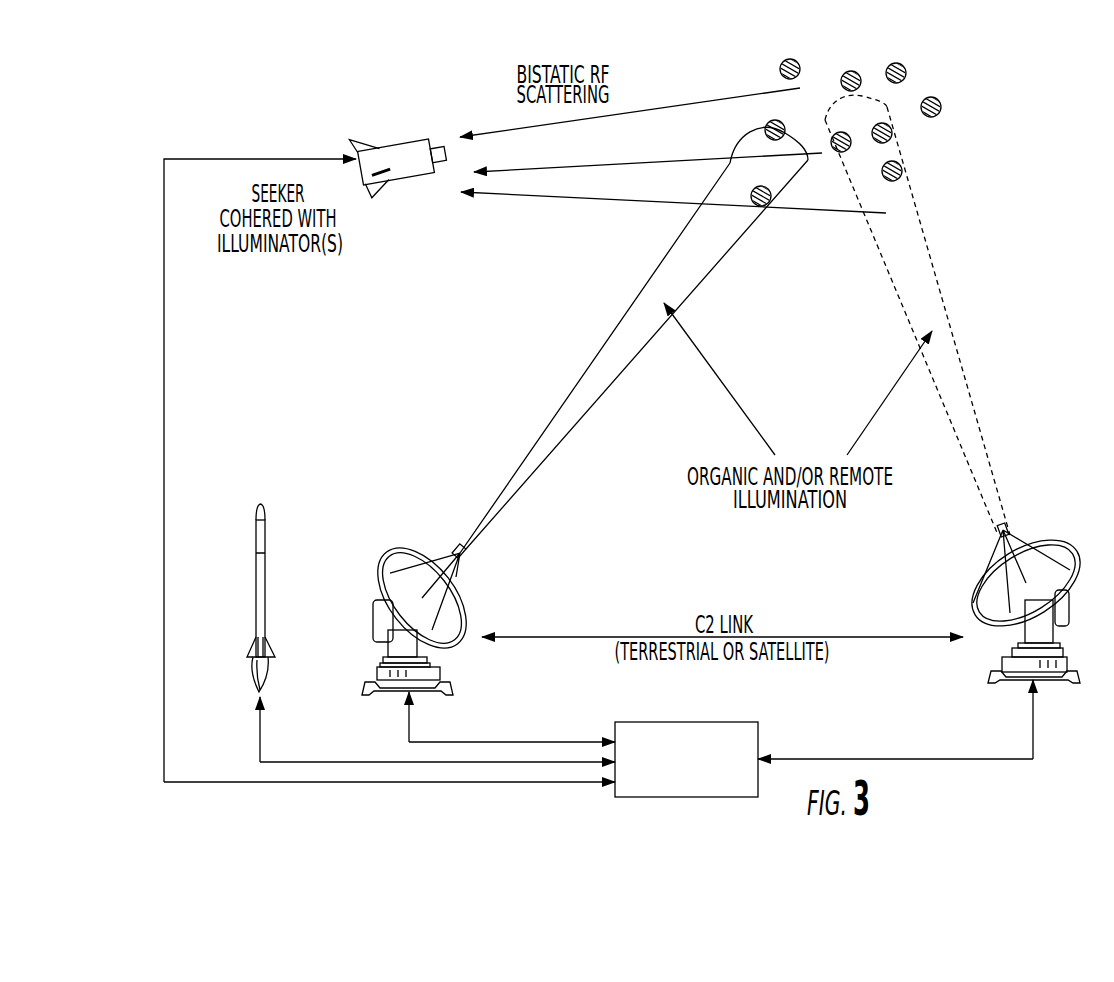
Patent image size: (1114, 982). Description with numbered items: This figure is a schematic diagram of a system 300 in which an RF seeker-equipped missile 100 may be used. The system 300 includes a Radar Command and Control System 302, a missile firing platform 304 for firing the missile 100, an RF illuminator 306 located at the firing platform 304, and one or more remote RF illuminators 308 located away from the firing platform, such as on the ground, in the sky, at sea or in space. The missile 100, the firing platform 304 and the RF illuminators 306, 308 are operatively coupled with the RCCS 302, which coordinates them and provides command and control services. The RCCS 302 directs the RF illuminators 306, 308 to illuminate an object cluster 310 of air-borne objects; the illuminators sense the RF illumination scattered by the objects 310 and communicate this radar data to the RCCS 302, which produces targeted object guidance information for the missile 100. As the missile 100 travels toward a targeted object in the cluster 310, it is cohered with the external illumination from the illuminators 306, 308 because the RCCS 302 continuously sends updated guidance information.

The system 300 is at (315, 72).
The RF seeker-equipped missile 100 is at (400, 140).
The object cluster 310 is at (924, 82).
The Radar Command and Control System (RCCS) 302 is at (733, 722).
The missile firing platform 304 is at (265, 565).
The RF illuminator 306 is at (467, 613).
The remote RF illuminator 308 is at (1052, 543).